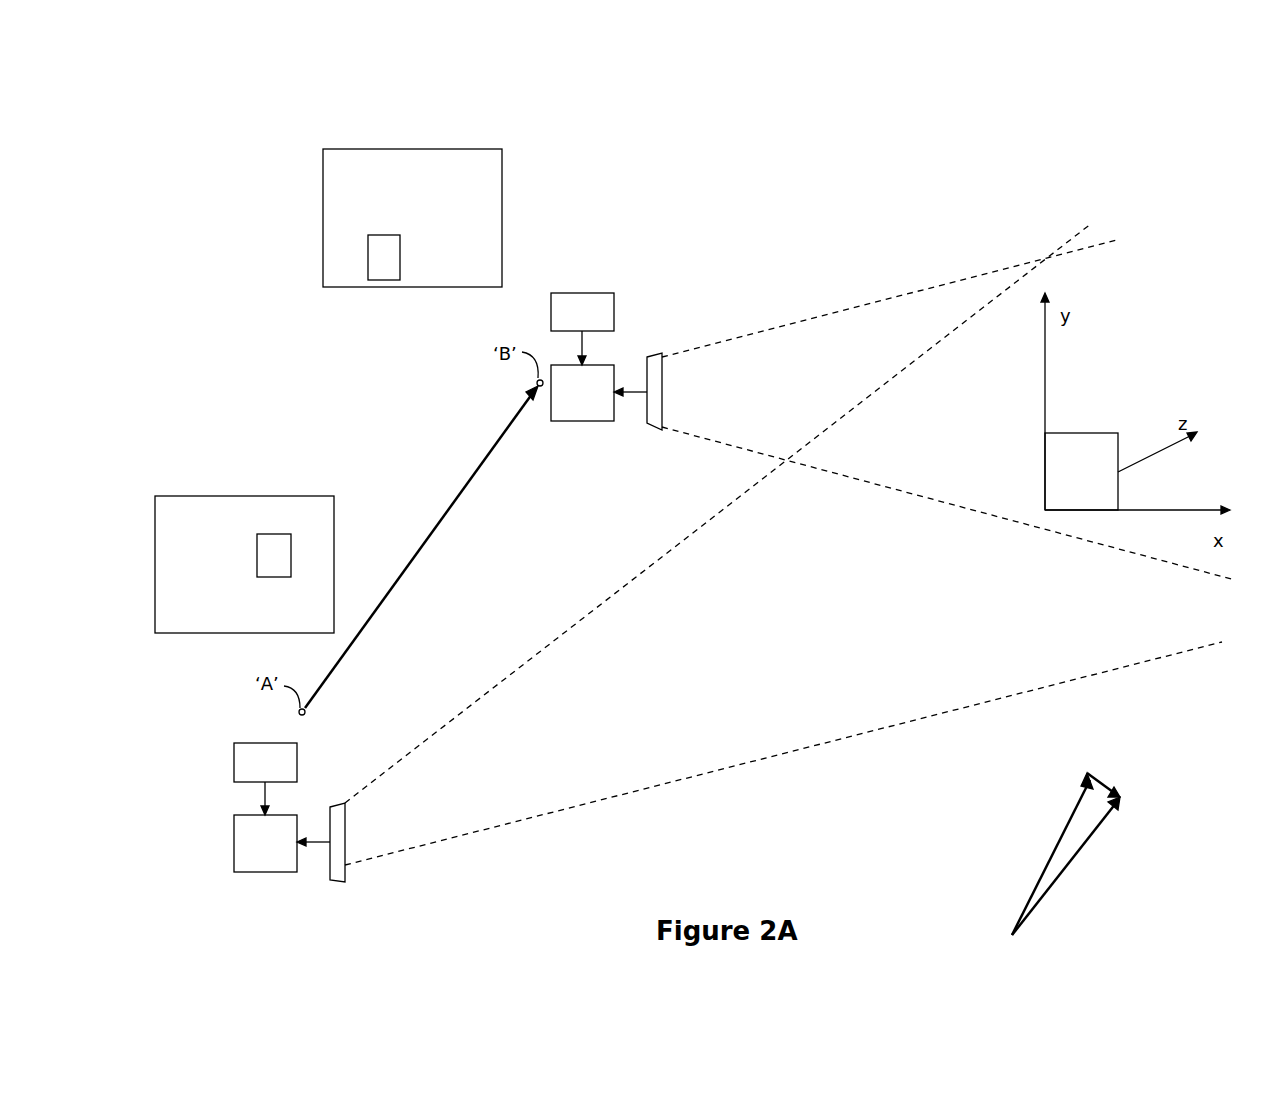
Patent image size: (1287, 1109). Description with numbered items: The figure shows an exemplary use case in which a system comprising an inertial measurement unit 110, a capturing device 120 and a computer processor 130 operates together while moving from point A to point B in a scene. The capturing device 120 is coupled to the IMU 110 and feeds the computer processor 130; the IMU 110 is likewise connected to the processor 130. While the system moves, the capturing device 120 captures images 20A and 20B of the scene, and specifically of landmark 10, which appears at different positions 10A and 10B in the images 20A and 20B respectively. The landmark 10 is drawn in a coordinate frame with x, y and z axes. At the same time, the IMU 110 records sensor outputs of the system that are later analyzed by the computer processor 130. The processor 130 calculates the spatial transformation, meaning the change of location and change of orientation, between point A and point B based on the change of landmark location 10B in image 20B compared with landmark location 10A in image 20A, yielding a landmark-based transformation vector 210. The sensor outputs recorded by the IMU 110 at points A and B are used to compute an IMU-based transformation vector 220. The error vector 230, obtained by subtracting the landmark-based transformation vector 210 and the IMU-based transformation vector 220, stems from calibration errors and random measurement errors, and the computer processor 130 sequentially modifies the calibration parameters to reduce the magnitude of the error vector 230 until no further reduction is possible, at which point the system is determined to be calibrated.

The image 20B is at (388, 149).
The landmark position 10B is at (384, 235).
The image 20A is at (220, 496).
The landmark position 10A is at (275, 534).
The inertial measurement unit 110 is at (580, 293).
The computer processor 130 is at (577, 421).
The capturing device 120 is at (654, 430).
The landmark 10 is at (1112, 433).
The landmark-based transformation vector 210 is at (1057, 830).
The IMU-based transformation vector 220 is at (1100, 830).
The error vector 230 is at (1100, 783).